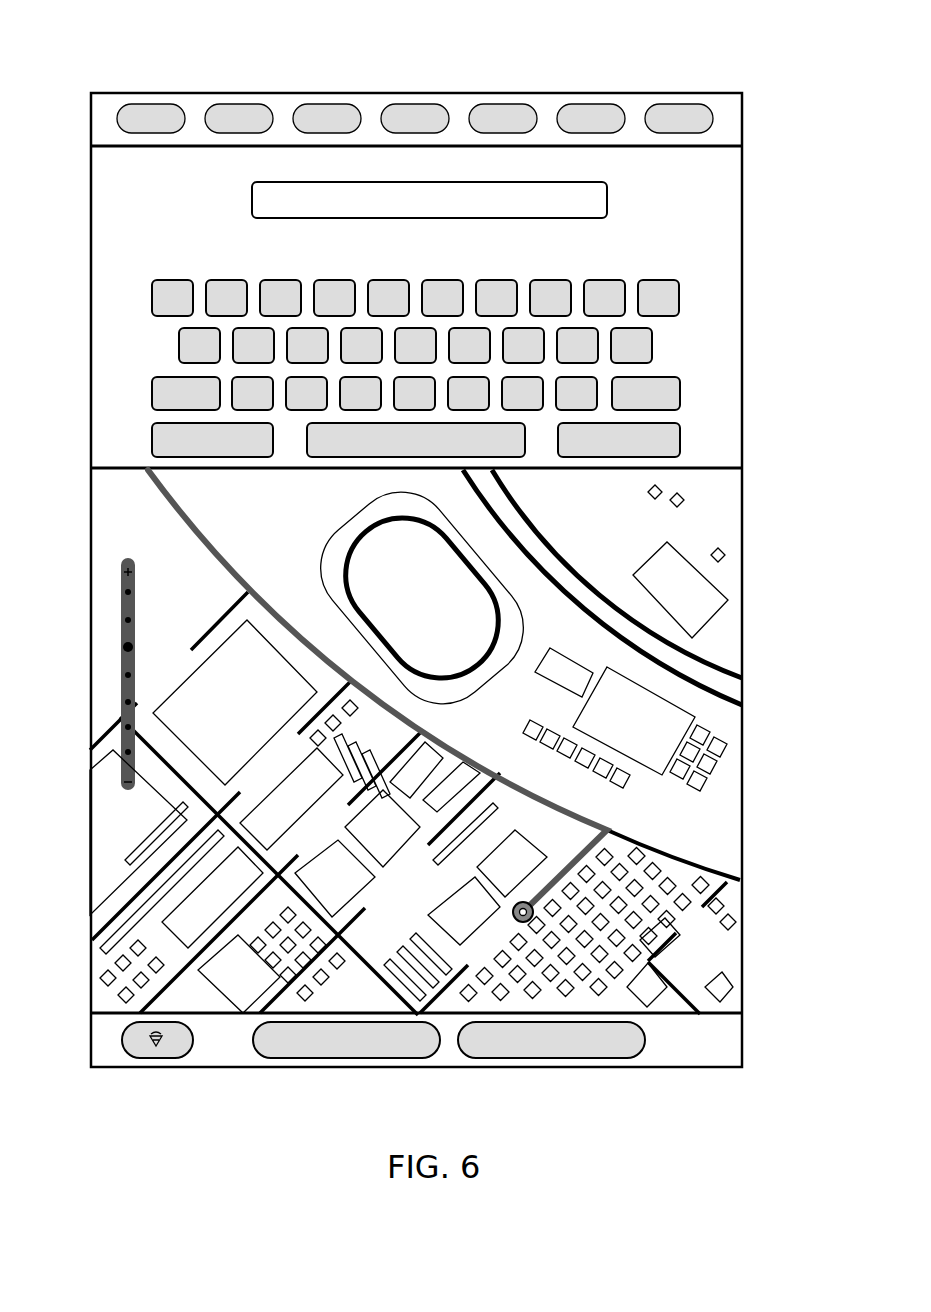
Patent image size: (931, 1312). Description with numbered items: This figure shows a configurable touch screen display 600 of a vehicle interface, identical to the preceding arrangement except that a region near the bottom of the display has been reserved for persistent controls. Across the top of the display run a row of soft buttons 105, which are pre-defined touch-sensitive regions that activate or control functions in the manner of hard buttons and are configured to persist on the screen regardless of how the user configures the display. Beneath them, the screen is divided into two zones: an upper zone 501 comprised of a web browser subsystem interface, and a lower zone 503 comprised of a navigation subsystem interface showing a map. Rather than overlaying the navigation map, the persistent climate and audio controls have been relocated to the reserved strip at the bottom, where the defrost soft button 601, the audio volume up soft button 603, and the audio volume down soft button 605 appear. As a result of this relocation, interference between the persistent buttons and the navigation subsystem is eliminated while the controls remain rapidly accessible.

The display 600 is at (720, 63).
The soft buttons 105 is at (415, 118).
The upper zone 501 is at (84, 322).
The lower zone 503 is at (84, 783).
The defrost soft button 601 is at (172, 1047).
The audio volume up soft button 603 is at (415, 1047).
The audio volume down soft button 605 is at (633, 1047).